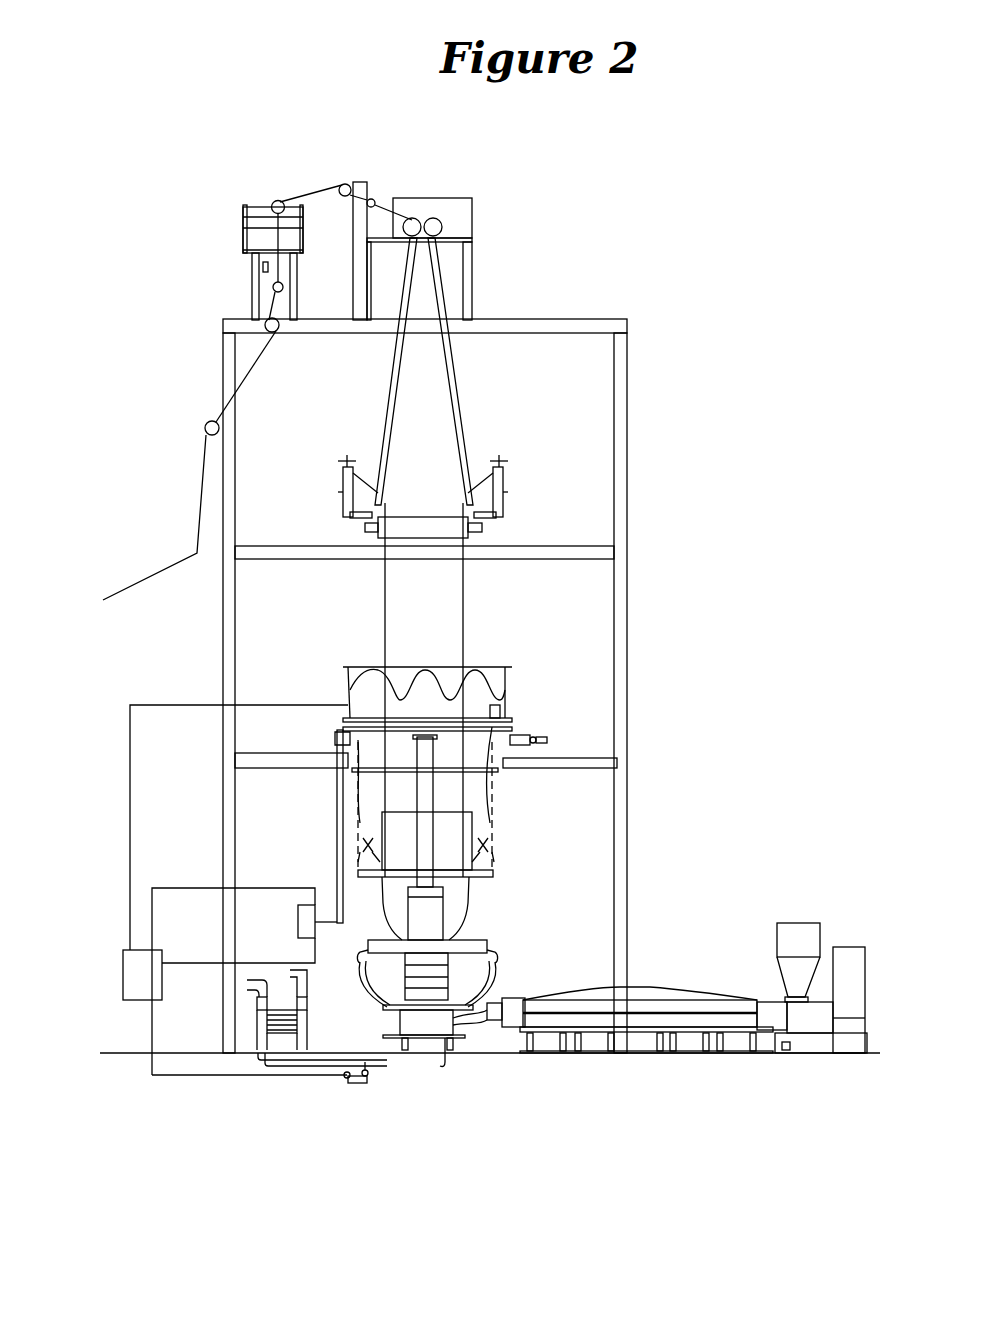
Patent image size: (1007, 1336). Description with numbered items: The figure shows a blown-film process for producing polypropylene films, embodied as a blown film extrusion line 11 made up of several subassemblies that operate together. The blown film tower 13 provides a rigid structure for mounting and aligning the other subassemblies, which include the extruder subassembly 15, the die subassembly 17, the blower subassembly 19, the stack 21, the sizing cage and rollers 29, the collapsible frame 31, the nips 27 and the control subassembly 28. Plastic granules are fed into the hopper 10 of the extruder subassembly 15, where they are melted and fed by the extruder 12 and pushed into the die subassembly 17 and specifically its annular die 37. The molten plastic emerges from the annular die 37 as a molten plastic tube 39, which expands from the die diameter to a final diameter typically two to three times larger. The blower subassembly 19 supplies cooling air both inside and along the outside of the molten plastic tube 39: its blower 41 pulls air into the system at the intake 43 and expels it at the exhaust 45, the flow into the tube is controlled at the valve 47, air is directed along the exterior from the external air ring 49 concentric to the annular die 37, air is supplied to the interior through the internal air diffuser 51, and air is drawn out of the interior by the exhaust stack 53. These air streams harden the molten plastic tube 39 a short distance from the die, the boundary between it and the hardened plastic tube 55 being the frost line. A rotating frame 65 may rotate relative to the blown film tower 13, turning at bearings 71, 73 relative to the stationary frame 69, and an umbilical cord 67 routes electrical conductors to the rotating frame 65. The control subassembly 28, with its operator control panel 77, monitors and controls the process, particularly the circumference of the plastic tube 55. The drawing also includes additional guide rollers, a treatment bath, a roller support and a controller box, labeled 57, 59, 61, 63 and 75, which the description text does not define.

The hopper 10 is at (820, 897).
The blown film extrusion line 11 is at (640, 373).
The extruder 12 is at (700, 987).
The blown film tower 13 is at (627, 520).
The extruder subassembly 15 is at (735, 923).
The die subassembly 17 is at (471, 1032).
The blower subassembly 19 is at (327, 1087).
The stack 21 is at (407, 912).
The nips 27 is at (433, 213).
The control subassembly 28 is at (118, 820).
The sizing cage 29 is at (490, 847).
The collapsible frame 31 is at (458, 390).
The annular die 37 is at (475, 940).
The molten plastic tube 39 is at (468, 917).
The blower 41 is at (253, 1033).
The intake 43 is at (247, 982).
The exhaust 45 is at (308, 972).
The valve 47 is at (372, 1087).
The external air ring 49 is at (510, 947).
The internal air diffuser 51 is at (417, 930).
The exhaust stack 53 is at (425, 790).
The hardened plastic tube 55 is at (463, 603).
The guide roller 57 is at (345, 183).
The treatment bath 59 is at (273, 203).
The guide roller 61 is at (258, 328).
The guide roller 63 is at (198, 422).
The rotating frame 65 is at (513, 728).
The umbilical cord 67 is at (343, 692).
The stationary frame 69 is at (565, 763).
The bearing 71 is at (330, 735).
The bearing 73 is at (515, 738).
The controller 75 is at (123, 983).
The operator control panel 77 is at (300, 927).